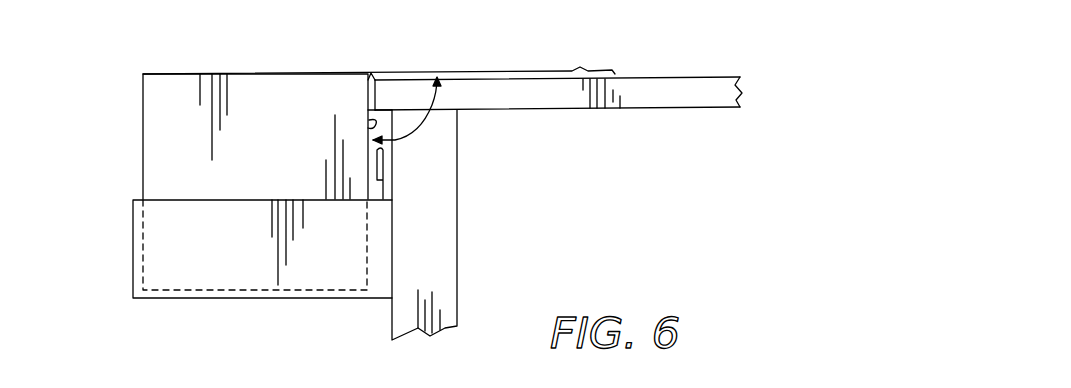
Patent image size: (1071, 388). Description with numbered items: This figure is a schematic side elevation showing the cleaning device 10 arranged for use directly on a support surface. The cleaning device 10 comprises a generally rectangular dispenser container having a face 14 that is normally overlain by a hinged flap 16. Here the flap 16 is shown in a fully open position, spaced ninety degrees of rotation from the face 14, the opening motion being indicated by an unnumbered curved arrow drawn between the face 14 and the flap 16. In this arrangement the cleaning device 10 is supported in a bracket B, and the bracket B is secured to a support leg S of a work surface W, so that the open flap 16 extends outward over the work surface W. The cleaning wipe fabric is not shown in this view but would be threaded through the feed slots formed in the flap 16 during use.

The cleaning device 10 is at (120, 135).
The face 14 is at (372, 133).
The flap 16 is at (497, 70).
The work surface W is at (655, 80).
The support leg S is at (437, 258).
The bracket B is at (218, 300).